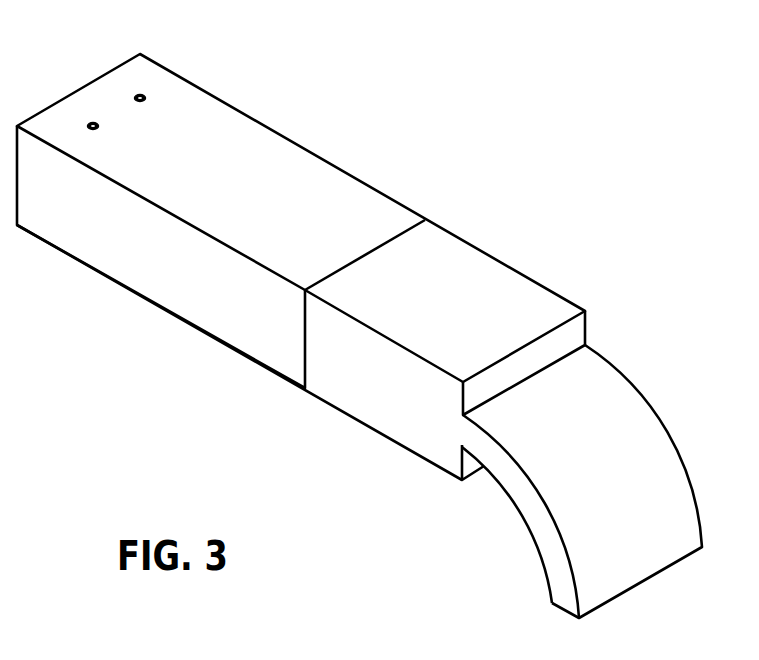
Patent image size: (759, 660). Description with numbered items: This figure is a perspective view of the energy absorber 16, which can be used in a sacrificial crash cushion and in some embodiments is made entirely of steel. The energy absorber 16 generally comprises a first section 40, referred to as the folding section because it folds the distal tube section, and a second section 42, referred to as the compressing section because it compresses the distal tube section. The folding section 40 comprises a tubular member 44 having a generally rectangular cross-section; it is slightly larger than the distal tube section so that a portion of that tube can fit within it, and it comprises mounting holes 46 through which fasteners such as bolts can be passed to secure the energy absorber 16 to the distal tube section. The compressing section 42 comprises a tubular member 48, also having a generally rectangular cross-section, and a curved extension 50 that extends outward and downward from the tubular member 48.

The energy absorber 16 is at (610, 143).
The first section 40 is at (302, 133).
The second section 42 is at (612, 285).
The tubular member 44 is at (152, 288).
The mounting holes 46 is at (137, 96).
The tubular member 48 is at (385, 422).
The curved extension 50 is at (700, 427).